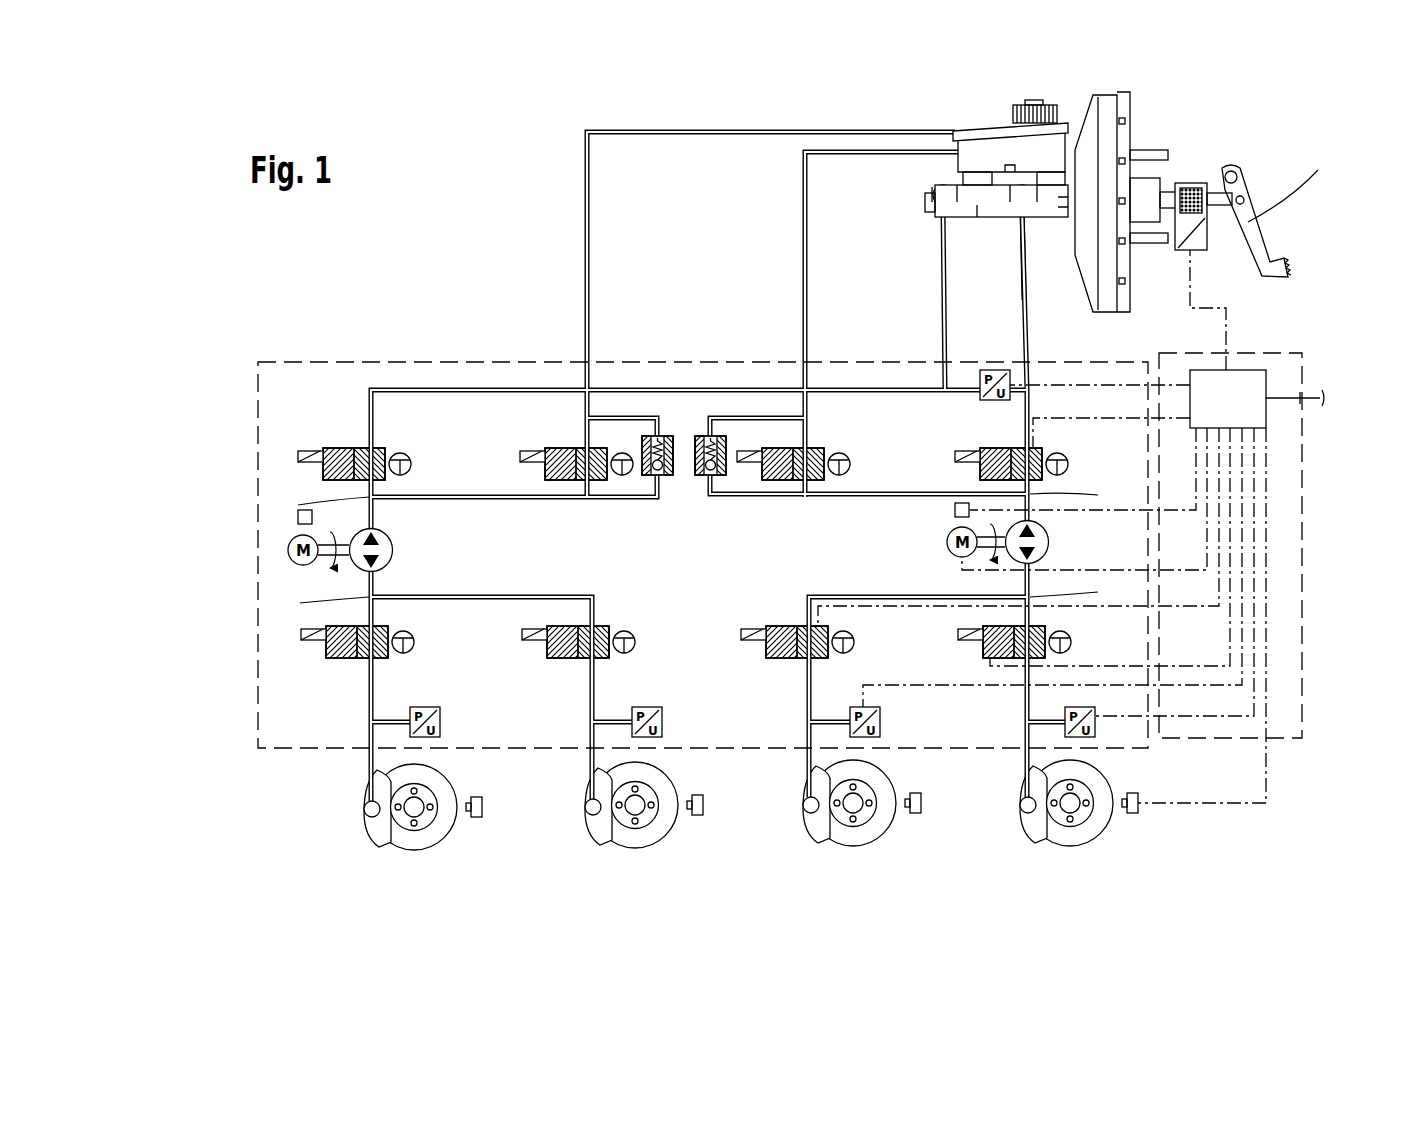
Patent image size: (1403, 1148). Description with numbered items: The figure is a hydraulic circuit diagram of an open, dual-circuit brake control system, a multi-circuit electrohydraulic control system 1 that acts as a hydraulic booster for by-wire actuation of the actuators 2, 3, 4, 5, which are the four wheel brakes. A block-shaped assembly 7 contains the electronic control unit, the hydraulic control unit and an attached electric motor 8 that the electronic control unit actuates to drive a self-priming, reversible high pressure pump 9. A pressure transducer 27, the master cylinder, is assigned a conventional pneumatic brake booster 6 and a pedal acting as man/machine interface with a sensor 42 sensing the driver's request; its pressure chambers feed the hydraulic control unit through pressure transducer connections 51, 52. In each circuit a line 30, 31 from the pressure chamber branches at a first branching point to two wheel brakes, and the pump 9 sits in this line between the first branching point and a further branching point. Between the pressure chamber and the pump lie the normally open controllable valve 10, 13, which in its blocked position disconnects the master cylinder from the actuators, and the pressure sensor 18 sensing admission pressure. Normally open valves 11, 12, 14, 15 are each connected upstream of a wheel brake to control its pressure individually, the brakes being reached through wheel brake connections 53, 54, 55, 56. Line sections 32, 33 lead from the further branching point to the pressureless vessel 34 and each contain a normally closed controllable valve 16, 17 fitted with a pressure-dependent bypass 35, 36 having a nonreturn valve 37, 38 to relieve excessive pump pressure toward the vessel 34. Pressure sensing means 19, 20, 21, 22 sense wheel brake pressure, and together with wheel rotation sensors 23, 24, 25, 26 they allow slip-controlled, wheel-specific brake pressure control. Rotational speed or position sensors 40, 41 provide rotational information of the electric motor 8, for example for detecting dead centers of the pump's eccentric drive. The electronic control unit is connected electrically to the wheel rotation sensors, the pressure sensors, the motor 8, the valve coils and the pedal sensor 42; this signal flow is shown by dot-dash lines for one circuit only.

The multi-circuit electrohydraulic control system 1 is at (430, 272).
The actuator 2 is at (370, 850).
The actuator 3 is at (590, 850).
The actuator 4 is at (808, 848).
The actuator 5 is at (1026, 848).
The brake booster 6 is at (1135, 135).
The block-shaped assembly 7 is at (343, 357).
The electric motor 8 is at (288, 550).
The high pressure pump 9 is at (393, 549).
The controllable valve open in the currentless state 10 is at (380, 450).
The controllable valve open in the currentless state 11 is at (338, 650).
The controllable valve open in the currentless state 12 is at (558, 650).
The controllable valve open in the currentless state 13 is at (978, 468).
The controllable valve open in the currentless state 14 is at (993, 650).
The controllable valve open in the currentless state 15 is at (778, 650).
The controllable valve closed in the currentless state 16 is at (543, 468).
The controllable valve closed in the currentless state 17 is at (820, 450).
The pressure sensor 18 is at (992, 403).
The pressure sensing means 19 is at (425, 740).
The pressure sensing means 20 is at (647, 740).
The pressure sensing means 21 is at (865, 740).
The pressure sensing means 22 is at (1080, 740).
The wheel rotation sensor 23 is at (477, 818).
The wheel rotation sensor 24 is at (698, 816).
The wheel rotation sensor 25 is at (916, 814).
The wheel rotation sensor 26 is at (1133, 814).
The pressure transducer 27 is at (975, 218).
The line 30 is at (488, 386).
The line 31 is at (1032, 305).
The line section 32 is at (585, 233).
The line section 33 is at (803, 233).
The pressureless vessel 34 is at (962, 162).
The bypass 35 is at (632, 502).
The bypass 36 is at (742, 500).
The nonreturn valve 37 is at (660, 478).
The nonreturn valve 38 is at (704, 478).
The rotational speed sensor and/or position sensor 40 is at (297, 517).
The rotational speed sensor and/or position sensor 41 is at (954, 510).
The sensor 42 is at (1185, 255).
The pressure transducer connection 51 is at (944, 335).
The pressure transducer connection 52 is at (1024, 335).
The wheel brake connection 53 is at (370, 755).
The wheel brake connection 54 is at (591, 755).
The wheel brake connection 55 is at (808, 755).
The wheel brake connection 56 is at (1026, 755).